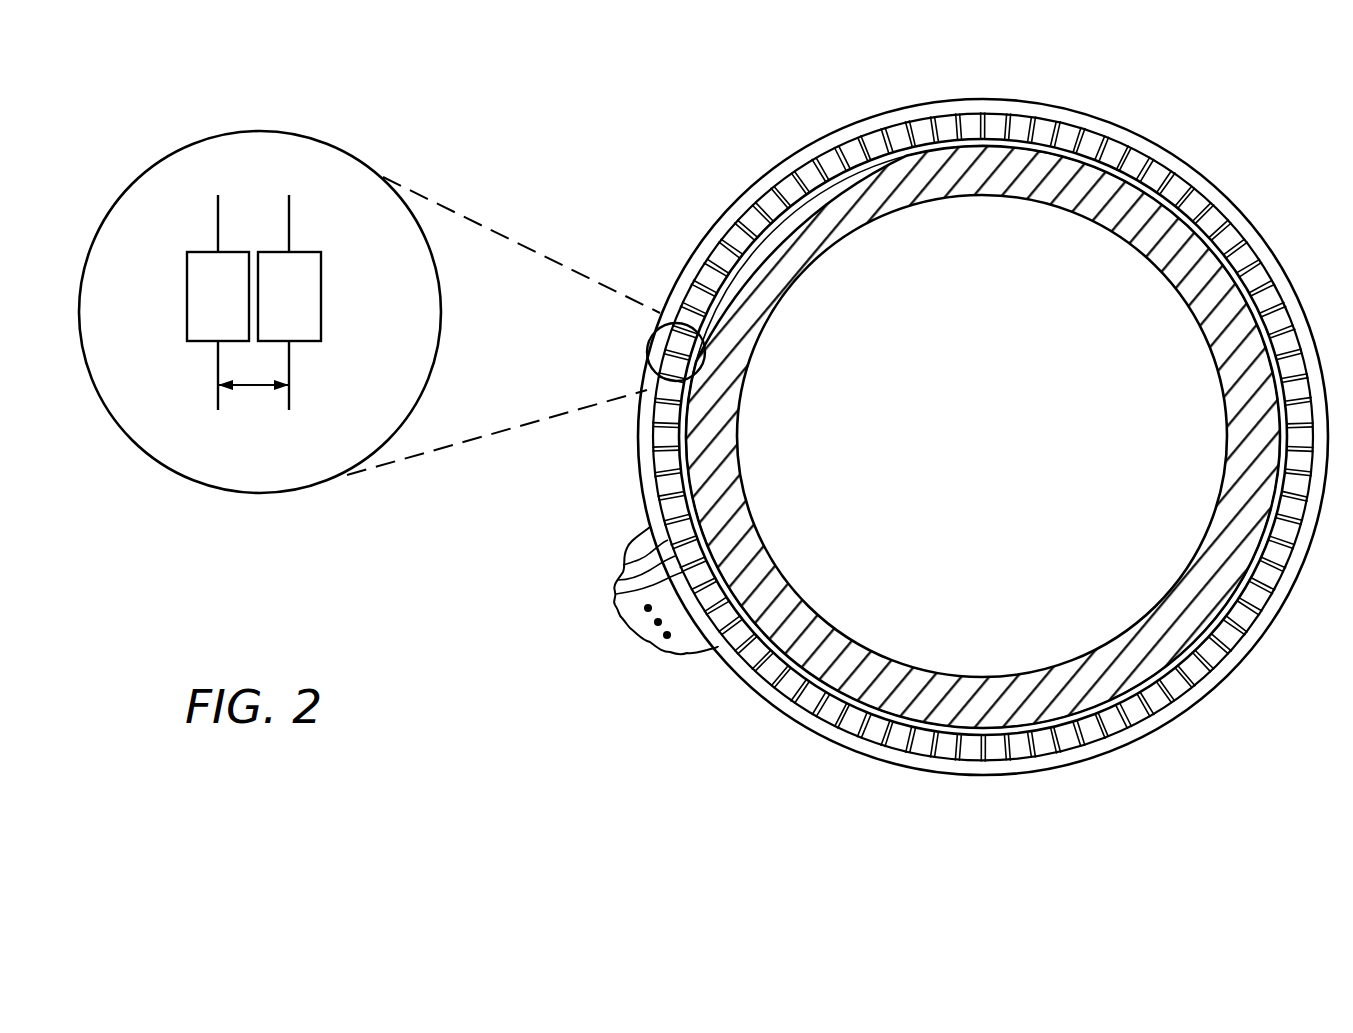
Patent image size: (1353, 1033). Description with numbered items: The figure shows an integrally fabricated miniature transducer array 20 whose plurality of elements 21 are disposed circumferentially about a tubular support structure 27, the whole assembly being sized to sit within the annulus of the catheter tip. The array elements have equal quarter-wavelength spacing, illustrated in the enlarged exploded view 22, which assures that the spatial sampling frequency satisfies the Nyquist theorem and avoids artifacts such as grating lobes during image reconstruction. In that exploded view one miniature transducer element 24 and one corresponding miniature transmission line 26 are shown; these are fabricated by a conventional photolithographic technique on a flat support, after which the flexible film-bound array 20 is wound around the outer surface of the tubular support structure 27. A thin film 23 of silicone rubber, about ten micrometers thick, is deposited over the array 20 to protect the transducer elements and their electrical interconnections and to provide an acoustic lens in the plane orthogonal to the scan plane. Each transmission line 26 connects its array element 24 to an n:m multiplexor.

The miniature transducer array 20 is at (836, 825).
The elements 21 is at (614, 600).
The enlarged exploded view 22 is at (142, 453).
The thin film 23 is at (767, 692).
The miniature transducer element 24 is at (320, 302).
The miniature transmission line 26 is at (207, 302).
The tubular support structure 27 is at (930, 150).